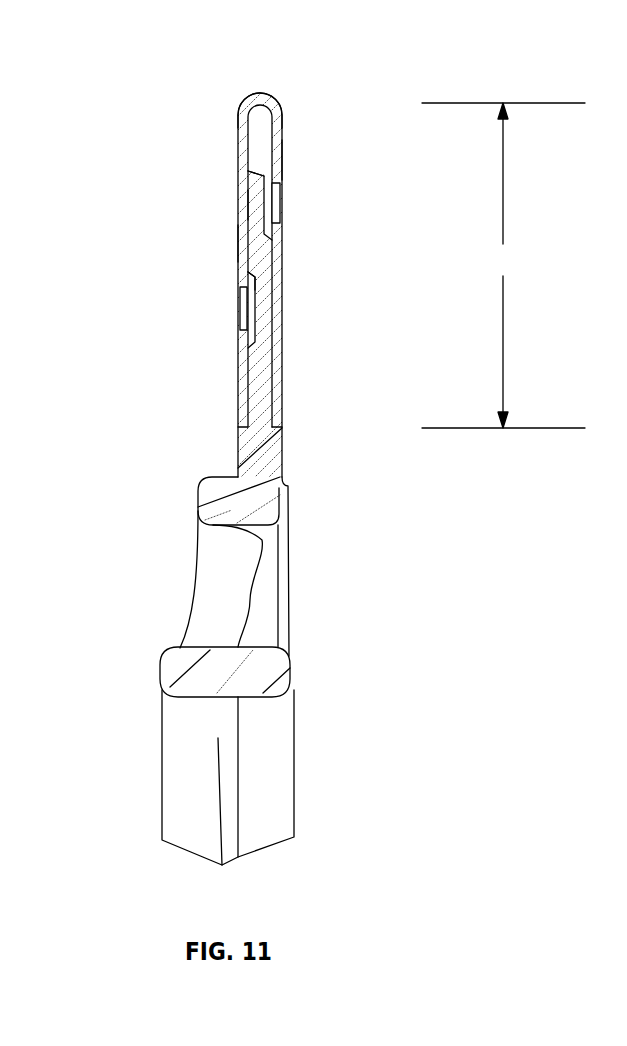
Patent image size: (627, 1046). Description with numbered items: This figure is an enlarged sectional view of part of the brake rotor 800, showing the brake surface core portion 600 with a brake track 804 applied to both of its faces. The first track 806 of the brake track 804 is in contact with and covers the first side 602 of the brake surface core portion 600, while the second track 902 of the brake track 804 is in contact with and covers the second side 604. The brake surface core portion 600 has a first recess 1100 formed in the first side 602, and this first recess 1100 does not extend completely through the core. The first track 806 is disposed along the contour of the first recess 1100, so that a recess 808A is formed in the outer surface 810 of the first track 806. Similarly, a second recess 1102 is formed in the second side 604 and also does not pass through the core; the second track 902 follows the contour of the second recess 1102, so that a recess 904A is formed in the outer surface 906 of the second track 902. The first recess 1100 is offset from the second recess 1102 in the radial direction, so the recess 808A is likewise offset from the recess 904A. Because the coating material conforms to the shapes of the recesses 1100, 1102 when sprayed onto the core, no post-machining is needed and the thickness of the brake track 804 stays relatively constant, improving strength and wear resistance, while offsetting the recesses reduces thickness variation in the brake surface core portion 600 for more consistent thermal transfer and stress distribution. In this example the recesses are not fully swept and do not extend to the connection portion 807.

The blade assembly 800 is at (127, 230).
The brake surface core portion 600 is at (503, 265).
The first side 602 is at (273, 367).
The second side 604 is at (247, 367).
The brake track 804 is at (240, 124).
The first track 806 is at (277, 135).
The connection portion 807 is at (268, 92).
The recess 808A is at (287, 203).
The outer surface 810 is at (283, 165).
The second track 902 is at (247, 203).
The recess 904A is at (237, 300).
The outer surface 906 is at (238, 242).
The first recess 1100 is at (263, 168).
The second recess 1102 is at (255, 272).